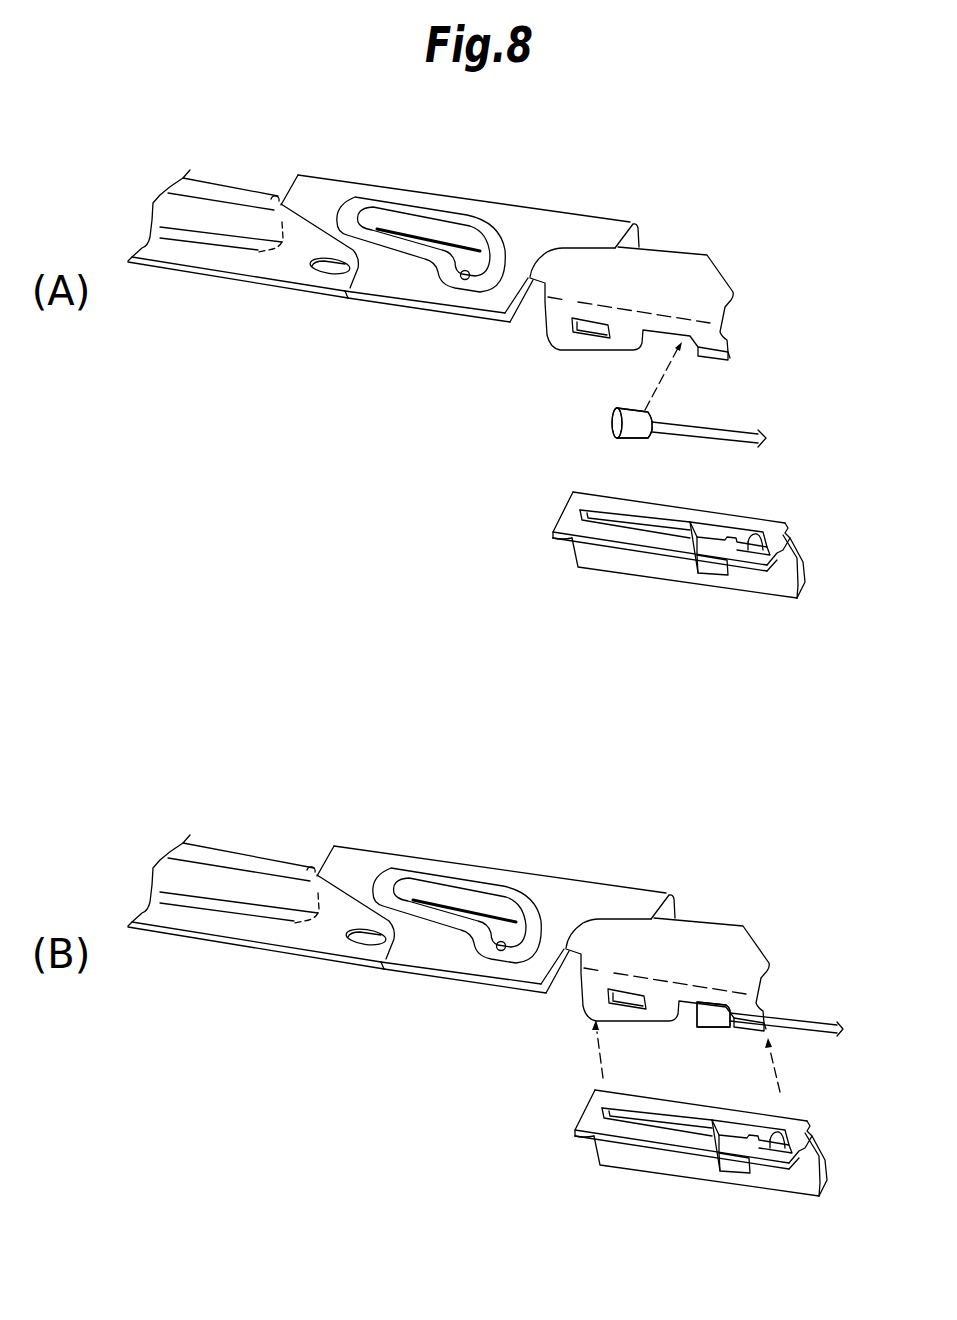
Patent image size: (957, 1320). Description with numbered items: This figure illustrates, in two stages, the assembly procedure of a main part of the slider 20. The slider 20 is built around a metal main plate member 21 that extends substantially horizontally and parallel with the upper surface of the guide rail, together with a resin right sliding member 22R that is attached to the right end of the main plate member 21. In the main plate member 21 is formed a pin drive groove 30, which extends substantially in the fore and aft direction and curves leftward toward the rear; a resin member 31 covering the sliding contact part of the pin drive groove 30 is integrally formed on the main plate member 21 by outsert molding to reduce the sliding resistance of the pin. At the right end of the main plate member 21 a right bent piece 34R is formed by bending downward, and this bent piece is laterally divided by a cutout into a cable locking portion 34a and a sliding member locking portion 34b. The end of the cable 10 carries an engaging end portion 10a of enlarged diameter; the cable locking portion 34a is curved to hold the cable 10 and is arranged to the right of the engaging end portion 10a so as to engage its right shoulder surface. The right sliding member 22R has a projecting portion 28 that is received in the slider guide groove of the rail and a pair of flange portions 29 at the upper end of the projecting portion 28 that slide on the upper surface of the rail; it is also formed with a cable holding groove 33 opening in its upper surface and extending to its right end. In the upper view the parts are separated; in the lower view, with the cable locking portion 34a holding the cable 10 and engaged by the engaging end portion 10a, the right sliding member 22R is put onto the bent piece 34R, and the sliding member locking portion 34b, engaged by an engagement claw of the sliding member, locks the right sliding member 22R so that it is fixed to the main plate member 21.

The cable 10 is at (695, 428).
The engaging end portion 10a is at (630, 430).
The slider 20 is at (266, 286).
The main plate member 21 is at (192, 255).
The right sliding member 22R is at (604, 592).
The projecting portion 28 is at (803, 583).
The flange portions 29 is at (765, 523).
The pin drive groove 30 is at (471, 282).
The resin member 31 is at (518, 220).
The cable holding groove 33 is at (755, 549).
The right bent piece 34R is at (742, 328).
The cable locking portion 34a is at (735, 356).
The sliding member locking portion 34b is at (573, 342).